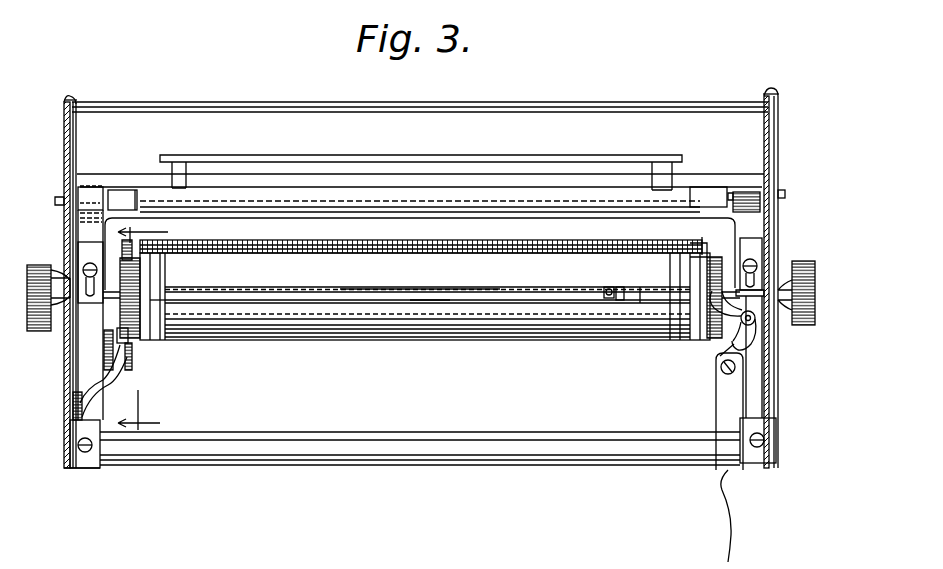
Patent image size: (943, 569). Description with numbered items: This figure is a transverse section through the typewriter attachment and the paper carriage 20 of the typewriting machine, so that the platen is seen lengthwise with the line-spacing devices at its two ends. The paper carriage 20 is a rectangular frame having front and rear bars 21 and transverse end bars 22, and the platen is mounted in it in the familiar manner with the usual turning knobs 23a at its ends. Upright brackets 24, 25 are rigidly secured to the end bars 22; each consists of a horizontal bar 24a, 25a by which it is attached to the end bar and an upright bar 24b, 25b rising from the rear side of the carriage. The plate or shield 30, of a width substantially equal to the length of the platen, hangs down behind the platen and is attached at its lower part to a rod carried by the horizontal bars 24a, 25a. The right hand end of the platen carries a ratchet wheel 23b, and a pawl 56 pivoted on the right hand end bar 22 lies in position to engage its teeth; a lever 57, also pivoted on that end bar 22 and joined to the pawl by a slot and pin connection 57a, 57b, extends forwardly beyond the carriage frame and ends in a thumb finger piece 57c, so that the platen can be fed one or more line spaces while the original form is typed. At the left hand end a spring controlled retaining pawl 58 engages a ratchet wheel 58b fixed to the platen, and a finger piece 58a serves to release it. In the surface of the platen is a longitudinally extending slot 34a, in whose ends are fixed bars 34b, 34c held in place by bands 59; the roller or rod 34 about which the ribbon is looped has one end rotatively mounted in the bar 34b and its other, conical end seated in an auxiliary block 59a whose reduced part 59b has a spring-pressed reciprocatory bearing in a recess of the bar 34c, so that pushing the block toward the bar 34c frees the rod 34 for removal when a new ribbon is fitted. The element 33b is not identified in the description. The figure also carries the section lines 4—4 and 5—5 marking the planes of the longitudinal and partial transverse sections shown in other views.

The section line 4— 4 is at (418, 301).
The section line 5— 5 is at (149, 329).
The paper carriage 20 is at (72, 470).
The front and rear bars 21 is at (375, 248).
The transverse end bars 22 is at (94, 405).
The turning knobs 23a is at (805, 252).
The ratchet wheel 23b is at (680, 270).
The upright bracket 24 is at (57, 428).
The horizontal bar 24a is at (76, 187).
The upright bar 24b is at (66, 104).
The upright bracket 25 is at (784, 427).
The horizontal bar 25a is at (775, 165).
The upright bar 25b is at (777, 104).
The plate or shield 30 is at (446, 238).
The platen core 33b is at (422, 290).
The roller or rod 34 is at (263, 296).
The longitudinally extending slot 34a is at (484, 278).
The bar 34b is at (165, 290).
The bar or block 34c is at (650, 304).
The pawl 56 is at (710, 327).
The lever 57 is at (716, 391).
The slot of slot and pin connection 57a is at (733, 334).
The pin of slot and pin connection 57b is at (752, 344).
The thumb finger piece 57c is at (722, 512).
The spring controlled retaining pawl 58 is at (136, 356).
The finger piece 58a is at (84, 400).
The ratchet wheel 58b is at (125, 282).
The bands 59 is at (168, 328).
The auxiliary block 59a is at (606, 286).
The reduced part 59b is at (620, 300).